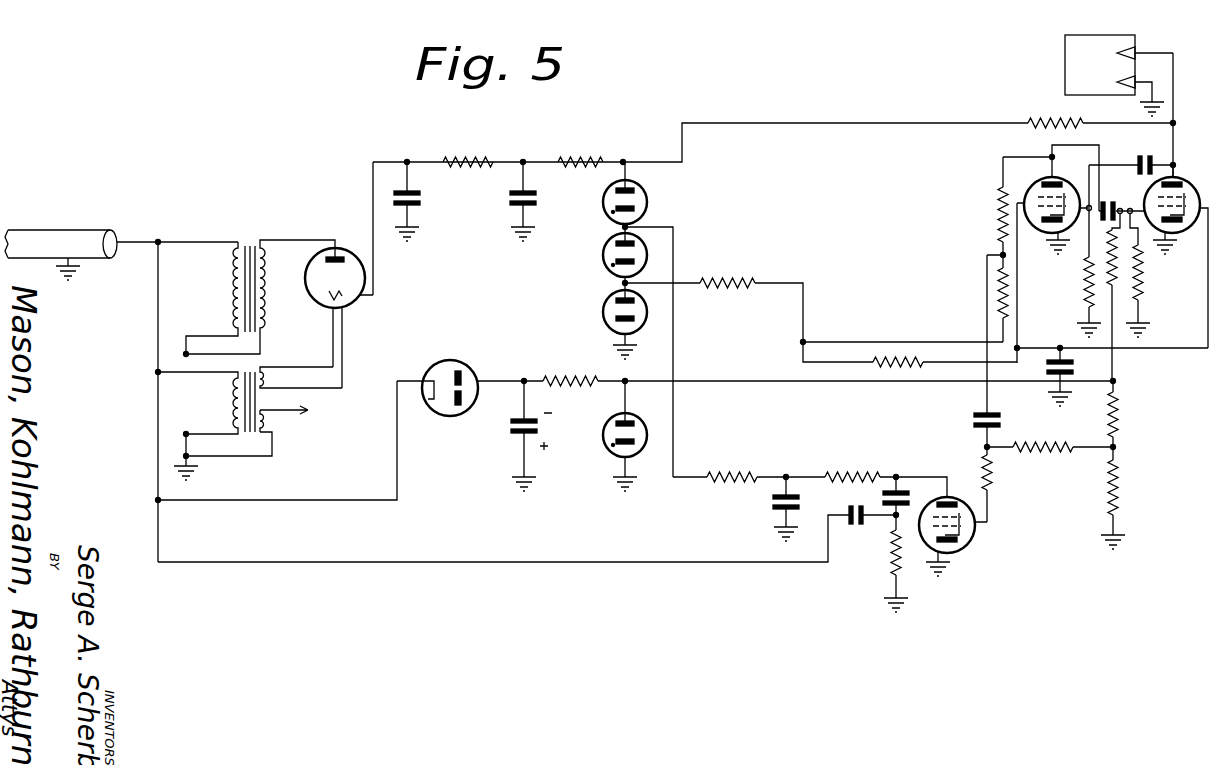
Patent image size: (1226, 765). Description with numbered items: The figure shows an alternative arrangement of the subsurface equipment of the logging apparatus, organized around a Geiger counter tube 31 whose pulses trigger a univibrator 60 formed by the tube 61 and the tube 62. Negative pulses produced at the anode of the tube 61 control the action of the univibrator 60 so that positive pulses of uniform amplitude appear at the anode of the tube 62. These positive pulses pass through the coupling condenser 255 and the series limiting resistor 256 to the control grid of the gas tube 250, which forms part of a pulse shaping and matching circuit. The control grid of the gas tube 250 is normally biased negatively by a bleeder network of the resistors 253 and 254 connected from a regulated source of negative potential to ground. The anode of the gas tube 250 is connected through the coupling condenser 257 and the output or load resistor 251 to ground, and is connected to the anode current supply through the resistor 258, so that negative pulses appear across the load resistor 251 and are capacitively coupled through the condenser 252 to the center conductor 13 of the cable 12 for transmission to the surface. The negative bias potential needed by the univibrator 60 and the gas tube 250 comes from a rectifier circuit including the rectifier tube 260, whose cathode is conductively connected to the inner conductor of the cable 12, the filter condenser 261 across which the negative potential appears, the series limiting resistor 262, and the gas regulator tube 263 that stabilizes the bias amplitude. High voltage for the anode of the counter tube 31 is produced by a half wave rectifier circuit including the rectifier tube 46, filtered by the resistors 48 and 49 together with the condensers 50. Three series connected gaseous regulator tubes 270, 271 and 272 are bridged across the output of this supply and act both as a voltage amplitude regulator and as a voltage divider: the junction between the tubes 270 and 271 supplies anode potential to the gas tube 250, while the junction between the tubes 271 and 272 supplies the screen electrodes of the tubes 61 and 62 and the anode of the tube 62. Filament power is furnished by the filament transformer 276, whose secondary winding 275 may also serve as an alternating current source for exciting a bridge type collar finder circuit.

The cable 12 is at (45, 240).
The center conductor 13 is at (130, 242).
The high voltage rectifier tube 46 is at (348, 250).
The resistor 48 is at (471, 160).
The resistor 49 is at (586, 160).
The condensers 50 is at (421, 196).
The gaseous regulator tube 270 is at (647, 191).
The gaseous regulator tube 271 is at (603, 248).
The gaseous regulator tube 272 is at (604, 306).
The rectifier tube 260 is at (440, 362).
The filter condenser 261 is at (507, 428).
The series limiting resistor 262 is at (562, 377).
The gas regulator tube 263 is at (607, 440).
The secondary winding 275 is at (270, 424).
The filament transformer 276 is at (264, 458).
The resistor 258 is at (848, 475).
The coupling condenser 257 is at (884, 498).
The condenser 252 is at (859, 526).
The load resistor 251 is at (890, 562).
The gas tube 250 is at (970, 548).
The series limiting resistor 256 is at (994, 474).
The coupling condenser 255 is at (975, 418).
The resistor 253 is at (1120, 404).
The resistor 254 is at (1120, 479).
The Geiger counter tube 31 is at (1078, 58).
The univibrator 60 is at (1132, 191).
The tube 61 is at (1192, 184).
The tube 62 is at (1040, 233).